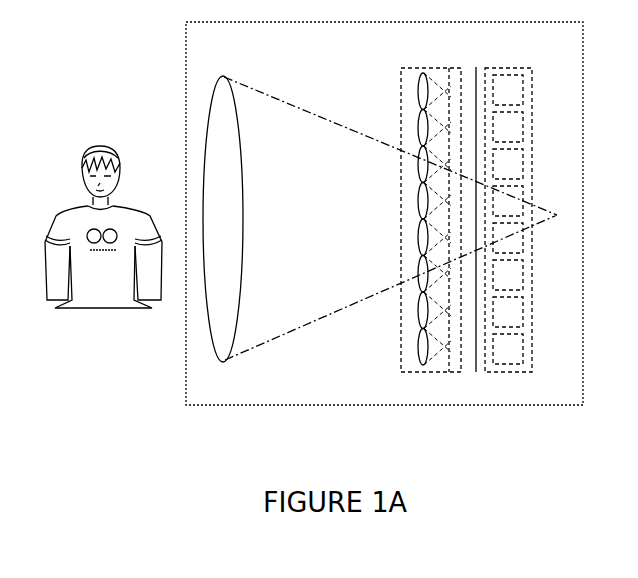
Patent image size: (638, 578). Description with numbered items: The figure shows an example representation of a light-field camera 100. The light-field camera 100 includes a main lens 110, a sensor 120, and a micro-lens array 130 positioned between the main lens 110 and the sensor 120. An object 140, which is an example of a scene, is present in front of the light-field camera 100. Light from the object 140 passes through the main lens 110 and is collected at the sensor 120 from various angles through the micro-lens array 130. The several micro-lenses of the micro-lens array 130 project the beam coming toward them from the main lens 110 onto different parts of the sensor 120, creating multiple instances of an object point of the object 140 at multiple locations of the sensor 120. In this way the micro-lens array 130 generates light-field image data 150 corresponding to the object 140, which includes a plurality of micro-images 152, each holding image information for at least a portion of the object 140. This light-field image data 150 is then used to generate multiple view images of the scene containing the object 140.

The light-field camera 100 is at (184, 389).
The main lens 110 is at (224, 76).
The sensor 120 is at (475, 72).
The micro-lens array 130 is at (426, 68).
The object 140 is at (103, 147).
The light-field image data 150 is at (513, 66).
The micro-image 152 is at (523, 86).